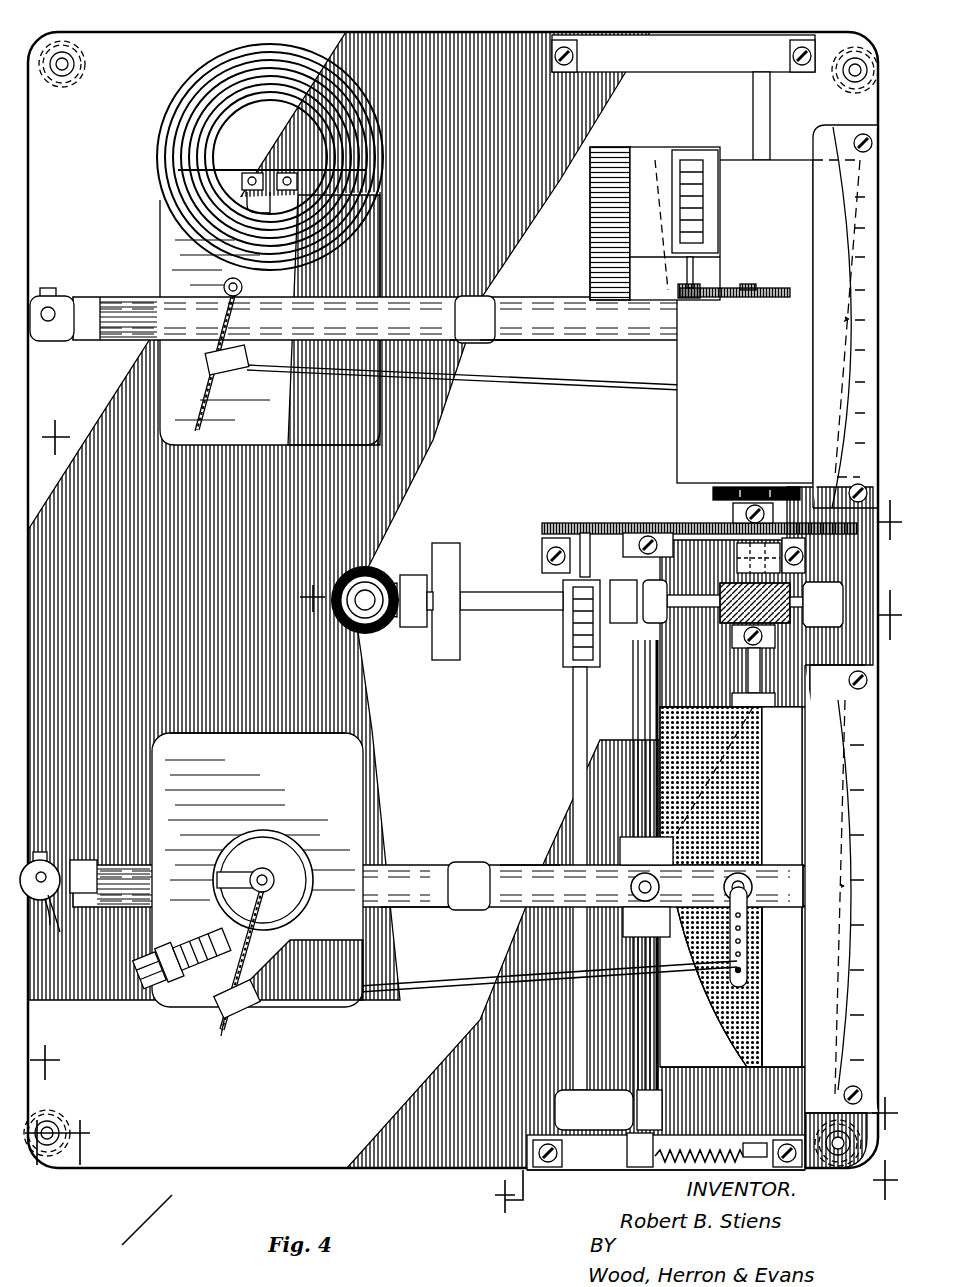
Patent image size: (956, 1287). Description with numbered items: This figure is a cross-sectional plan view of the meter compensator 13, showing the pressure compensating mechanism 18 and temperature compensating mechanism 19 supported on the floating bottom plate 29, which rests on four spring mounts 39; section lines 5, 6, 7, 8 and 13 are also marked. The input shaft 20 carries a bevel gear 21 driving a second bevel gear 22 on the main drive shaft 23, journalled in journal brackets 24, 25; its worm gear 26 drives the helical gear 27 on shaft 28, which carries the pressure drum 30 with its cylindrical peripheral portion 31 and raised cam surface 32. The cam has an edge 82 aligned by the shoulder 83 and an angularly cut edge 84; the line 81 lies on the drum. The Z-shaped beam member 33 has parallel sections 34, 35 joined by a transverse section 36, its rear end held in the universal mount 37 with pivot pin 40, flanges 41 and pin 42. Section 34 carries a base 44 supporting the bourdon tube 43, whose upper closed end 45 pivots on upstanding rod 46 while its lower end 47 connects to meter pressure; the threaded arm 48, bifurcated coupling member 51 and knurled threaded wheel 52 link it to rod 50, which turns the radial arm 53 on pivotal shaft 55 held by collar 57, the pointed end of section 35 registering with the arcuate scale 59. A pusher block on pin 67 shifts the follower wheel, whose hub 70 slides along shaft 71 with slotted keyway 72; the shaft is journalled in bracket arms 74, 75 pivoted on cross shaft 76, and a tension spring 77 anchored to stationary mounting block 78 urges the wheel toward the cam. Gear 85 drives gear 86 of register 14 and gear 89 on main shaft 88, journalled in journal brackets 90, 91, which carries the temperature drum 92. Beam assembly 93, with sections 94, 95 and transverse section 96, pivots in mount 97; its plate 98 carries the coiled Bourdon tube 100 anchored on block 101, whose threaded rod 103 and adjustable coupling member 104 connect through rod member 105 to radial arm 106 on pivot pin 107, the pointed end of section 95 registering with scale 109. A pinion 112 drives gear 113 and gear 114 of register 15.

The meter compensator 13 is at (62, 1157).
The register 14 is at (549, 660).
The register 15 is at (693, 151).
The pressure compensating mechanism 18 is at (415, 794).
The temperature compensating mechanism 19 is at (474, 405).
The shaft 20 is at (364, 633).
The bevel gear 21 is at (373, 577).
The second bevel gear 22 is at (418, 572).
The main drive shaft 23 is at (513, 612).
The journal bracket 24 is at (455, 582).
The journal bracket 25 is at (823, 604).
The worm gear 26 is at (740, 592).
The helical gear 27 is at (704, 595).
The shaft 28 is at (768, 708).
The floating bottom plate 29 is at (855, 40).
The pressure drum 30 is at (690, 1060).
The cylindrical peripheral portion 31 is at (786, 1016).
The raised cam surface 32 is at (752, 822).
The Z-shaped beam member 33 is at (431, 864).
The parallel section 34 is at (401, 906).
The parallel section 35 is at (530, 866).
The transverse section 36 is at (463, 904).
The universal mount 37 is at (52, 918).
The spring mount 39 is at (86, 58).
The transverse pivot pin 40 is at (48, 923).
The flange 41 is at (84, 874).
The pin 42 is at (62, 905).
The bourdon tube 43 is at (278, 828).
The base 44 is at (257, 870).
The upper closed end 45 is at (217, 881).
The upstanding rod 46 is at (250, 890).
The lower end 47 is at (195, 1003).
The threaded arm 48 is at (232, 1035).
The rod 50 is at (419, 1003).
The bifurcated coupling member 51 is at (250, 1012).
The knurled threaded wheel 52 is at (213, 1030).
The radial arm 53 is at (750, 976).
The pivotal shaft 55 is at (752, 876).
The collar 57 is at (723, 890).
The arcuate scale 59 is at (864, 836).
The pin 67 is at (630, 889).
The hub 70 is at (626, 860).
The shaft 71 is at (646, 722).
The slotted keyway 72 is at (648, 696).
The bracket arm 74 is at (608, 1110).
The bracket arm 75 is at (623, 601).
The cross shaft 76 is at (578, 776).
The tension spring 77 is at (627, 1152).
The stationary mounting block 78 is at (572, 1172).
The plate edge 81 is at (750, 1011).
The edge 82 is at (763, 1041).
The shoulder 83 is at (764, 1060).
The edge 84 is at (708, 992).
The gear 85 is at (636, 533).
The gear 86 is at (552, 523).
The main shaft 88 is at (772, 114).
The gear 89 is at (710, 522).
The journal bracket 90 is at (742, 540).
The journal bracket 91 is at (758, 52).
The temperature drum 92 is at (676, 415).
The beam assembly 93 is at (538, 345).
The parallel section 94 is at (126, 337).
The parallel section 95 is at (622, 337).
The transverse section 96 is at (478, 344).
The mount 97 is at (61, 284).
The plate 98 is at (270, 318).
The coiled Bourdon tube 100 is at (324, 50).
The block 101 is at (292, 200).
The threaded rod 103 is at (238, 336).
The adjustable coupling member 104 is at (207, 366).
The rod member 105 is at (568, 395).
The radial arm 106 is at (754, 407).
The pivot pin 107 is at (738, 333).
The scale 109 is at (835, 230).
The pinion 112 is at (757, 287).
The gear 113 is at (775, 294).
The gear 114 is at (702, 288).
The section line 5- 5 is at (464, 1076).
The section line 6- 6 is at (601, 625).
The section line 7- 7 is at (472, 468).
The section line 8- 8 is at (689, 1191).